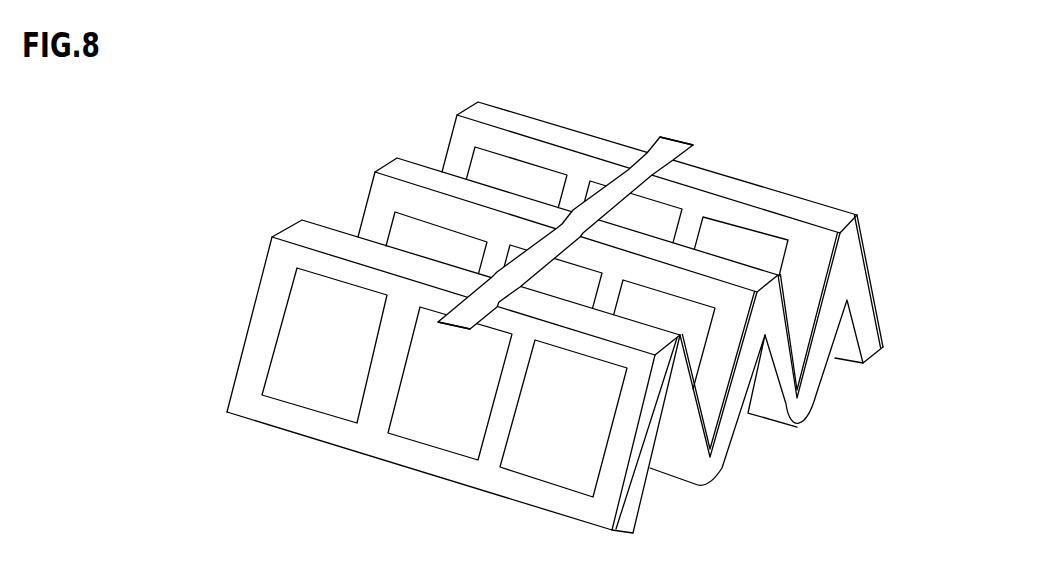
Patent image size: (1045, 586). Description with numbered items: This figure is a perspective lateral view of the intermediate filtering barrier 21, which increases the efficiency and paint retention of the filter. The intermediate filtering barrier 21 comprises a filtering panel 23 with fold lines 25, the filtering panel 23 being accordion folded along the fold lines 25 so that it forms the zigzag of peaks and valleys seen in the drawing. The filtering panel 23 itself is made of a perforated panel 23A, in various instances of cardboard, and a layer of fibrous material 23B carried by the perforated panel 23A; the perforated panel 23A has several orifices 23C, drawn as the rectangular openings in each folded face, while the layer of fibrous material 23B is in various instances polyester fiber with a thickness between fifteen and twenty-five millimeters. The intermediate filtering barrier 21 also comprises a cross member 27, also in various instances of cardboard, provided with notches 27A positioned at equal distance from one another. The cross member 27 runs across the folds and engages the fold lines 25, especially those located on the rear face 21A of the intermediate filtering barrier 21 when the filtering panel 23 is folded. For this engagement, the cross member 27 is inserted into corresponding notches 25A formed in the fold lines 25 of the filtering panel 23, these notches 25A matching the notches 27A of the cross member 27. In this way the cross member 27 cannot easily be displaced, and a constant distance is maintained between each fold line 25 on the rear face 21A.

The intermediate filtering barrier 21 is at (543, 276).
The rear face 21A is at (564, 187).
The filtering panel 23 is at (543, 276).
The perforated panel 23A is at (270, 282).
The layer of fibrous material 23B is at (869, 339).
The orifices 23C is at (355, 334).
The fold lines 25 is at (301, 219).
The notches 25A is at (479, 293).
The cross member 27 is at (583, 194).
The notches 27A is at (686, 150).